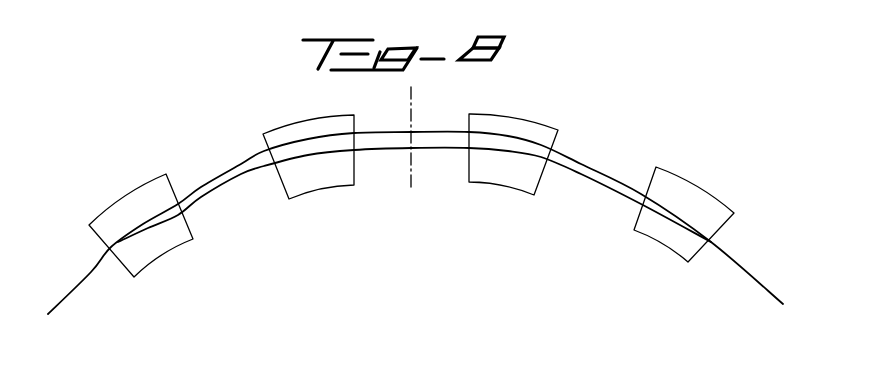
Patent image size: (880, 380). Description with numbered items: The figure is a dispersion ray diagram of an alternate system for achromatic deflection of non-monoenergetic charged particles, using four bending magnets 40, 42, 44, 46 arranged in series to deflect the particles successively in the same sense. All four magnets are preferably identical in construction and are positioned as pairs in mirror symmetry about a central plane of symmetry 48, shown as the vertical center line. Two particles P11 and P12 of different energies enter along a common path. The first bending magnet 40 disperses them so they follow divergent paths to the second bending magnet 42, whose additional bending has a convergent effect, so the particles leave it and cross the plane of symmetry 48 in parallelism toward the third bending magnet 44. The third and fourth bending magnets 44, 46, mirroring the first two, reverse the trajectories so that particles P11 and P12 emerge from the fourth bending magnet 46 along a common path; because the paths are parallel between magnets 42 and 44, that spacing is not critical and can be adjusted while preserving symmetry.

The first bending magnet 40 is at (134, 178).
The second bending magnet 42 is at (277, 119).
The third bending magnet 44 is at (521, 111).
The fourth bending magnet 46 is at (675, 174).
The central plane of symmetry 48 is at (401, 107).
The particle P11 is at (229, 175).
The particle P12 is at (231, 159).